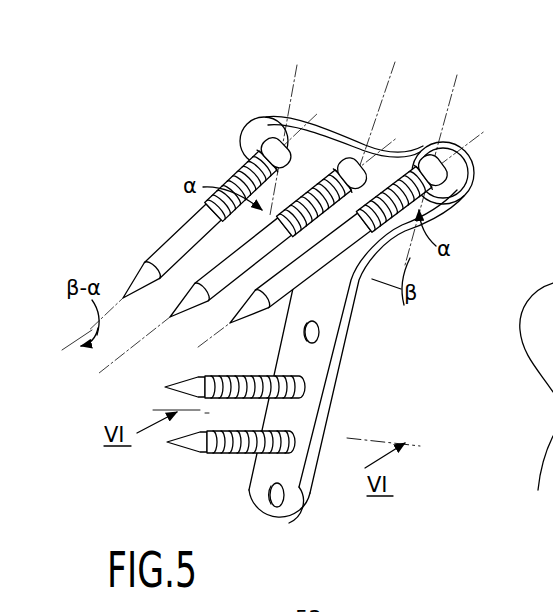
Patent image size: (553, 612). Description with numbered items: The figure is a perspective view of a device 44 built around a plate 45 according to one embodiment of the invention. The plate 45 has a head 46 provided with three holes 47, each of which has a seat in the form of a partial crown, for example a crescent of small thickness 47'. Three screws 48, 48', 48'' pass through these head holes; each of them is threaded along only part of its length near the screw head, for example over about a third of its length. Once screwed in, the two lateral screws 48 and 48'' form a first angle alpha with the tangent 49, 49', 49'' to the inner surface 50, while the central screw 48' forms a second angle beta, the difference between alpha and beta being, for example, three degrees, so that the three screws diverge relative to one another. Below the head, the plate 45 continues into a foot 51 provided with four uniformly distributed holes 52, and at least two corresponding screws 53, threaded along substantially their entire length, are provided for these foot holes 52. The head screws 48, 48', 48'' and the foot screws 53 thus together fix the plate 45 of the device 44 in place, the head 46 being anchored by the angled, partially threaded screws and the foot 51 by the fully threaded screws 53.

The device 44 is at (390, 297).
The plate 45 is at (345, 300).
The head 46 is at (287, 128).
The holes 47 is at (372, 122).
The crescent of small thickness 47' is at (372, 140).
The screw 48 is at (204, 221).
The central screw 48' is at (248, 255).
The screw 48'' is at (341, 238).
The tangent 49 is at (264, 139).
The tangent 49' is at (391, 113).
The tangent 49'' is at (465, 157).
The inner surface 50 is at (432, 142).
The foot 51 is at (331, 363).
The holes 52 is at (303, 338).
The screws 53 is at (218, 383).